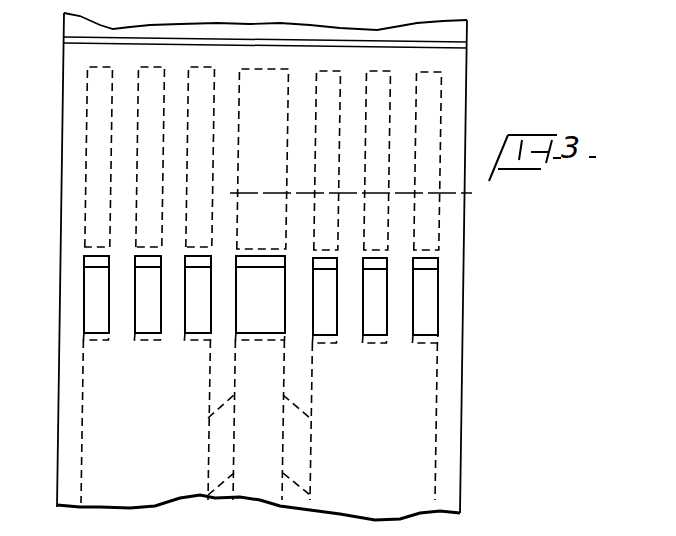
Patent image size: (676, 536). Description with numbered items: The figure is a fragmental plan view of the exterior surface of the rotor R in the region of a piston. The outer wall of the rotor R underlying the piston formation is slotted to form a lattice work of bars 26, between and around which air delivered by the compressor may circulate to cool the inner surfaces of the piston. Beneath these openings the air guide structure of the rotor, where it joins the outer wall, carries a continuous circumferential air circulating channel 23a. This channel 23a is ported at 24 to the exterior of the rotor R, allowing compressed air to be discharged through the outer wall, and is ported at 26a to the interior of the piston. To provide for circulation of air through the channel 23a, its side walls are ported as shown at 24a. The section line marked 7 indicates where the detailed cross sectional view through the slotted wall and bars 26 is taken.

The ports 24 is at (430, 372).
The side wall ports 24a is at (221, 442).
The bars 26 is at (303, 325).
The port to piston interior 26a is at (283, 139).
The circumferential air circulating channel 23a is at (270, 434).
The rotor R is at (60, 289).
The section line 7- 7 is at (230, 207).